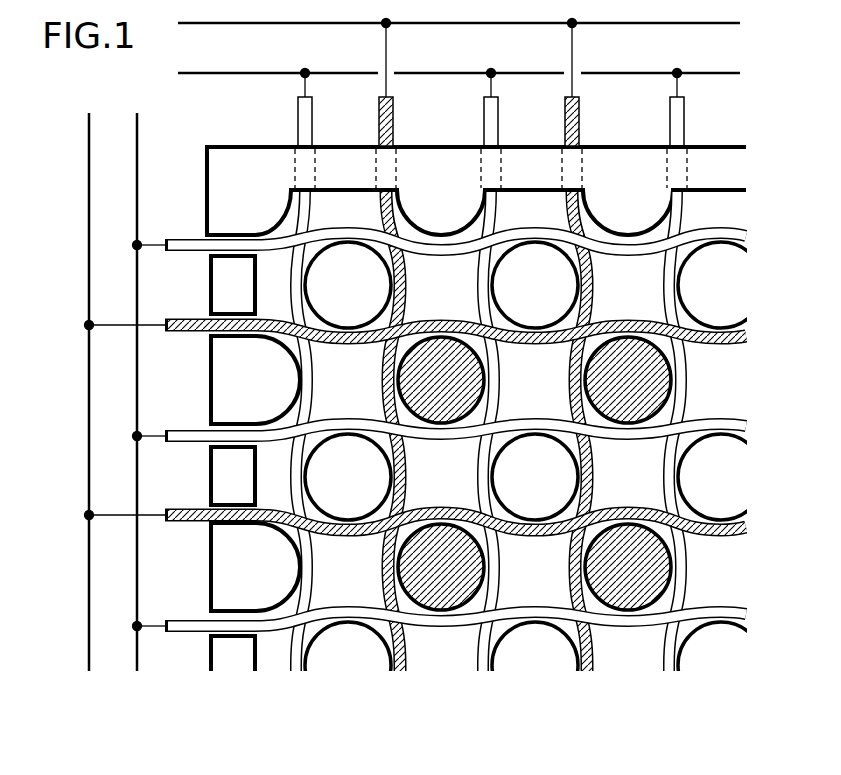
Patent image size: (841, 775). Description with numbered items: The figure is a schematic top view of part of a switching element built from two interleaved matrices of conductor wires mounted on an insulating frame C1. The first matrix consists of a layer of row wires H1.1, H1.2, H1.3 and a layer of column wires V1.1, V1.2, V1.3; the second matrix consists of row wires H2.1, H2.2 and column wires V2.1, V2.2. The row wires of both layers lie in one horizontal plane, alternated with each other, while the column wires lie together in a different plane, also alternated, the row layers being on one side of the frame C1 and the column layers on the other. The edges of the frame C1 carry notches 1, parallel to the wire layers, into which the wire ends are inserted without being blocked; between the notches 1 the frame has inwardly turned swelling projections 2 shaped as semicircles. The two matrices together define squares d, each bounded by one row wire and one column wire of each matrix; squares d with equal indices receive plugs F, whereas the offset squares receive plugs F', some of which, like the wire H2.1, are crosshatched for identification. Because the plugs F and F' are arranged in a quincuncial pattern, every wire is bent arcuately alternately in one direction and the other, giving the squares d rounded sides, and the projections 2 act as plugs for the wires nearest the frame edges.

The insulating frame C1 is at (212, 150).
The notch 1 is at (383, 167).
The swelling projection 2 is at (421, 222).
The square d is at (293, 318).
The column wire V1.1 is at (297, 114).
The column wire V2.1 is at (378, 114).
The column wire V1.2 is at (484, 114).
The column wire V2.2 is at (565, 114).
The column wire V1.3 is at (672, 114).
The row wire H1.1 is at (178, 238).
The row wire H2.1 is at (178, 318).
The row wire H1.2 is at (178, 430).
The row wire H2.2 is at (178, 506).
The row wire H1.3 is at (178, 616).